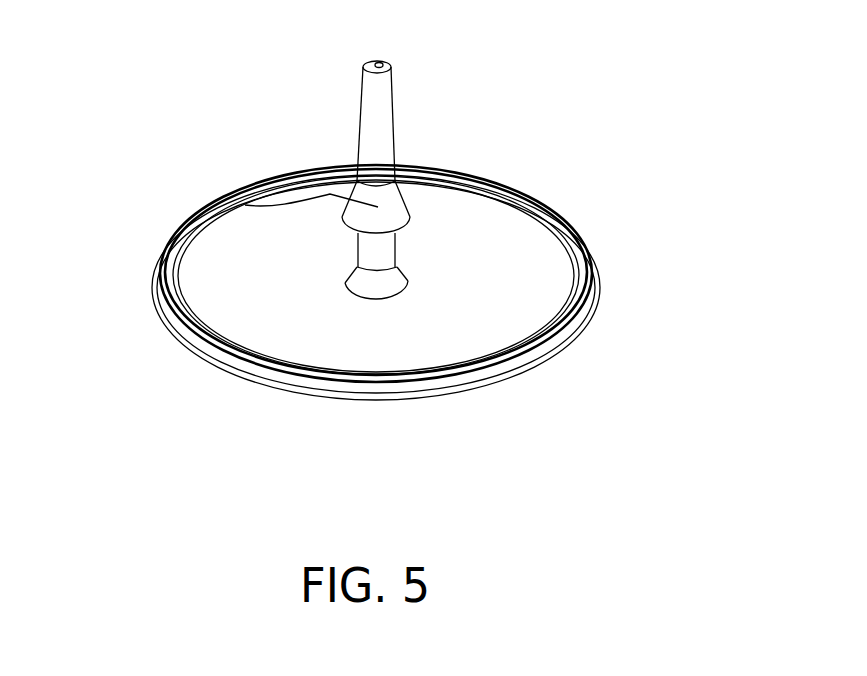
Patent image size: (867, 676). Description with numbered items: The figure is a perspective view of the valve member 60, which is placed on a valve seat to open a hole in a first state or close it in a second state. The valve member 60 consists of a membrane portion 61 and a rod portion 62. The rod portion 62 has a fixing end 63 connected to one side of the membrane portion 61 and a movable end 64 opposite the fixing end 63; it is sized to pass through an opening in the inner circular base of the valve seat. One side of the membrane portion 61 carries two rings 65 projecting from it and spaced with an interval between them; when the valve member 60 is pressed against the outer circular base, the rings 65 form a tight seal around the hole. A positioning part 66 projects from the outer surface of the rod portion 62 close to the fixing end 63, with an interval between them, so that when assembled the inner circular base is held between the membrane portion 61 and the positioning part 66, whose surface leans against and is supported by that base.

The valve member 60 is at (584, 83).
The membrane portion 61 is at (523, 228).
The rod portion 62 is at (388, 135).
The fixing end 63 is at (368, 282).
The movable end 64 is at (380, 87).
The ring 65 is at (588, 258).
The positioning part 66 is at (245, 205).